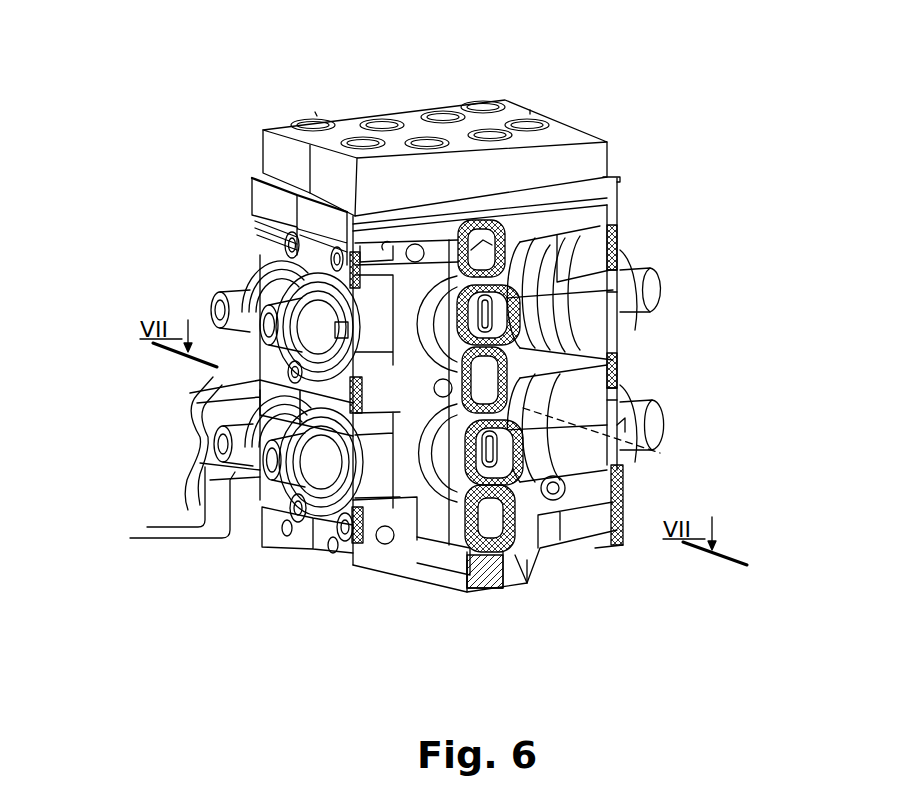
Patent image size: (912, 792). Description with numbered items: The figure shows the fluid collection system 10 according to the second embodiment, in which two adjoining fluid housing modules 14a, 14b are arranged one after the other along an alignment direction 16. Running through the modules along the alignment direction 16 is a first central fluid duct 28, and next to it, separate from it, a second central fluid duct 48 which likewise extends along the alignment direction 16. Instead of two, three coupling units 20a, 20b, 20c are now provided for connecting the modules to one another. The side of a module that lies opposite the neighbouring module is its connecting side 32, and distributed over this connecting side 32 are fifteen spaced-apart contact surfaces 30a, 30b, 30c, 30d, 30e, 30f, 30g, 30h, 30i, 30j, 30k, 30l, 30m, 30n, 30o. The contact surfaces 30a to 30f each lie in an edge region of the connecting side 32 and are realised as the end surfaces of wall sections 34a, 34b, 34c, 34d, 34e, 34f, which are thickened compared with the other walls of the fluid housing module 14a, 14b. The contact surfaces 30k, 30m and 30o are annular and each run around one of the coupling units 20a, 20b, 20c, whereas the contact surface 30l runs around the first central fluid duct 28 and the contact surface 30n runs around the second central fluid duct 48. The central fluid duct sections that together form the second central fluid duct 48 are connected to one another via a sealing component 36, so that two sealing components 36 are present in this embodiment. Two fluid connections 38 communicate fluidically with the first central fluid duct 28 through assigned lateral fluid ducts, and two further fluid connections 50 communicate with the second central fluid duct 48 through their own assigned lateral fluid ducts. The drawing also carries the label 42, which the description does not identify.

The fluid collection system 10 is at (619, 105).
The fluid housing module 14a is at (345, 549).
The fluid housing module 14b is at (350, 560).
The alignment direction 16 is at (652, 451).
The coupling unit 20a is at (510, 256).
The coupling unit 20b is at (620, 355).
The coupling unit 20c is at (510, 570).
The first central fluid duct 28 is at (605, 258).
The contact surface 30a is at (257, 250).
The contact surface 30b is at (215, 378).
The contact surface 30c is at (337, 558).
The contact surface 30d is at (630, 533).
The contact surface 30e is at (630, 377).
The contact surface 30f is at (620, 242).
The contact surface 30g is at (312, 230).
The contact surface 30h is at (433, 560).
The contact surface 30i is at (640, 306).
The contact surface 30j is at (625, 455).
The contact surface 30k is at (483, 252).
The contact surface 30l is at (618, 320).
The contact surface 30m is at (610, 415).
The contact surface 30n is at (612, 530).
The contact surface 30o is at (495, 585).
The connecting side 32 is at (598, 555).
The wall section 34a is at (257, 262).
The wall section 34b is at (200, 400).
The wall section 34c is at (355, 495).
The wall section 34d is at (632, 508).
The wall section 34e is at (630, 376).
The wall section 34f is at (622, 222).
The sealing component 36 is at (393, 265).
The fluid connection 38 is at (342, 110).
The valve boss 42 is at (222, 297).
The second central fluid duct 48 is at (630, 483).
The fluid connection 50 is at (467, 112).